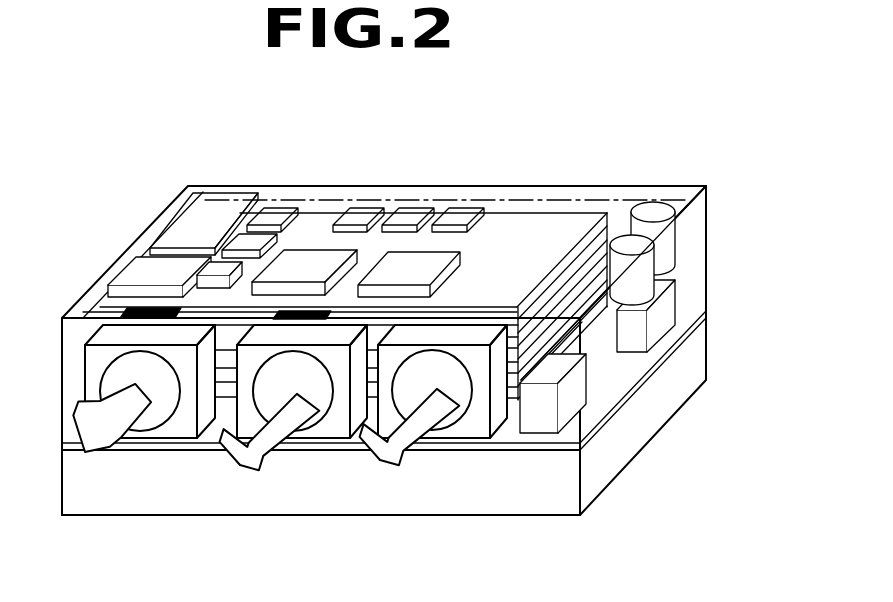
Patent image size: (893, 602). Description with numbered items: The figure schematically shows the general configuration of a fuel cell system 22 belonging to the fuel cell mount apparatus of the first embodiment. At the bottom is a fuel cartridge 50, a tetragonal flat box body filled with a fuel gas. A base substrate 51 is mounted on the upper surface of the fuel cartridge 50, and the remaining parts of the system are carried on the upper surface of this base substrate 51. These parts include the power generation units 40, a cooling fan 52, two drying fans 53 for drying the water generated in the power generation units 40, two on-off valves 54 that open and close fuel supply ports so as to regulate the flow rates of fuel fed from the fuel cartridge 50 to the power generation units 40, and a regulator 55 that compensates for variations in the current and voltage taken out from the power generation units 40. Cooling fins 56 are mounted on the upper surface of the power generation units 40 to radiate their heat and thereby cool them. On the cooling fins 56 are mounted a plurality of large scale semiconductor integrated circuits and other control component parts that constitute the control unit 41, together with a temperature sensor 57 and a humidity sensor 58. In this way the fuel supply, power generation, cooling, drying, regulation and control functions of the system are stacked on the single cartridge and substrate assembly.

The fuel cell system 22 is at (398, 162).
The power generation units 40 is at (558, 228).
The control unit 41 is at (312, 265).
The fuel cartridge 50 is at (487, 500).
The base substrate 51 is at (553, 445).
The cooling fan 52 is at (163, 440).
The drying fans 53 is at (328, 433).
The on-off valves 54 is at (567, 402).
The regulator 55 is at (645, 346).
The cooling fins 56 is at (240, 213).
The temperature sensor 57 is at (150, 312).
The humidity sensor 58 is at (296, 308).